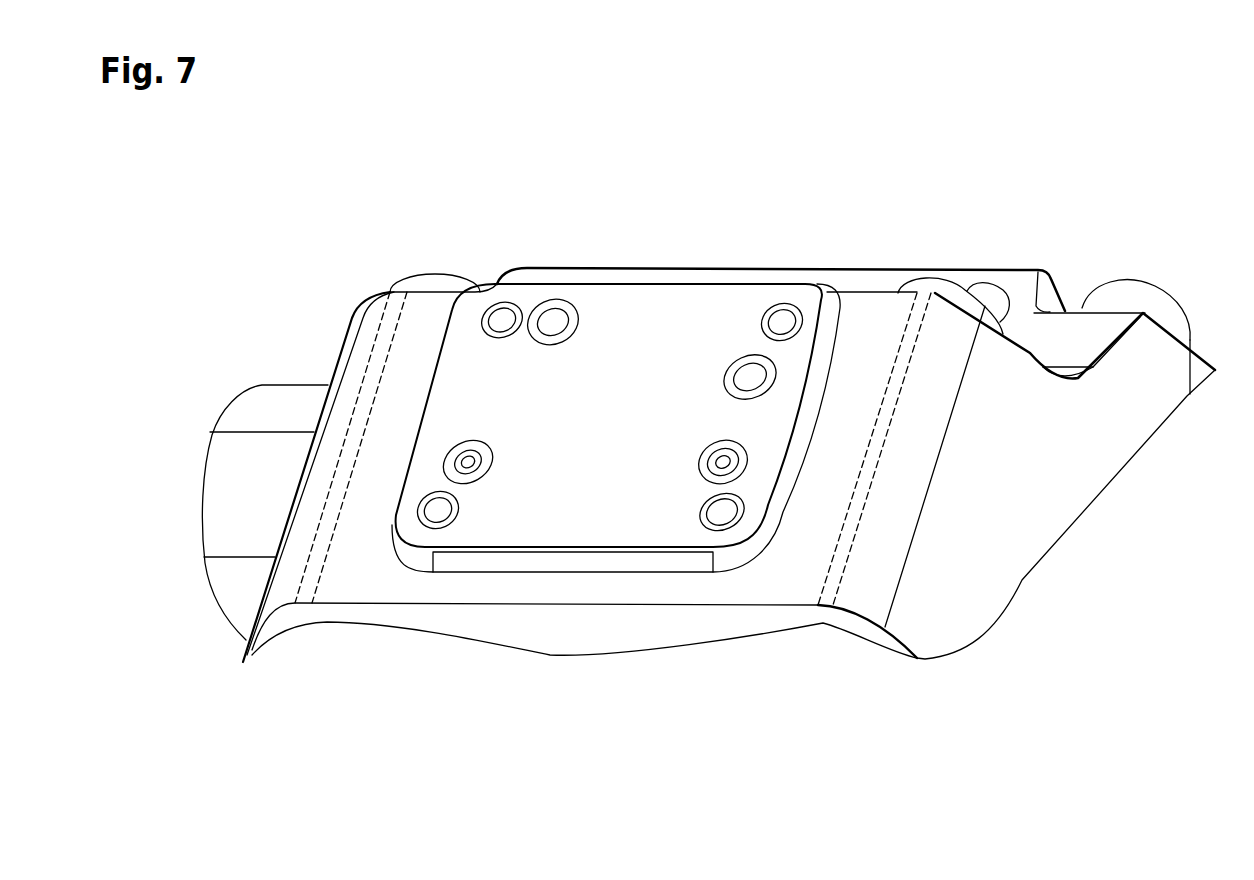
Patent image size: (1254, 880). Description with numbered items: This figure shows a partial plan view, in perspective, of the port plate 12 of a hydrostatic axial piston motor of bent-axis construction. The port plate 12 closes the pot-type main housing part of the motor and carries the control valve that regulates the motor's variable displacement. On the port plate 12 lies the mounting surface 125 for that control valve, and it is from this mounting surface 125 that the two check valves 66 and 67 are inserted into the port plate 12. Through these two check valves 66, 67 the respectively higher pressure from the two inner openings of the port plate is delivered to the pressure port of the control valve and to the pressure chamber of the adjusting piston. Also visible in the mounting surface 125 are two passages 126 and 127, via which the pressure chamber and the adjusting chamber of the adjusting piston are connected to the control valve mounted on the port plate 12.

The port plate 12 is at (1067, 460).
The mounting surface 125 is at (672, 300).
The passage 126 is at (750, 377).
The passage 127 is at (553, 322).
The check valve 66 is at (468, 462).
The check valve 67 is at (723, 462).